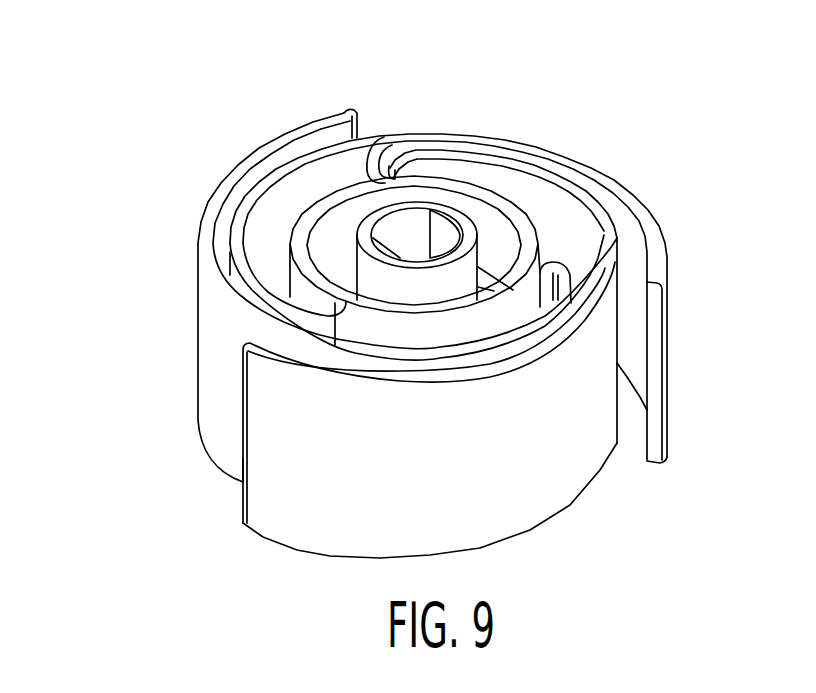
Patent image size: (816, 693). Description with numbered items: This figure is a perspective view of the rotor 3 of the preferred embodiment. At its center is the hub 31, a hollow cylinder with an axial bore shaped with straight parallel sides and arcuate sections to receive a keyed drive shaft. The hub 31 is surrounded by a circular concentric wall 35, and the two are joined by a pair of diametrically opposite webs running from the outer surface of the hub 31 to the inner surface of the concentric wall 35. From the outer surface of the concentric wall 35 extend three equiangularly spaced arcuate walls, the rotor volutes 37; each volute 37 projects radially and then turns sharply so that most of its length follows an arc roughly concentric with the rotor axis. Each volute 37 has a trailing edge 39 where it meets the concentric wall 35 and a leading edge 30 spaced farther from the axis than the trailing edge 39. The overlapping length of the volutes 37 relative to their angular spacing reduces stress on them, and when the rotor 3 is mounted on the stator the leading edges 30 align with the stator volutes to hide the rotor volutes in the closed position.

The rotor 3 is at (150, 243).
The leading edge 30 is at (243, 458).
The hub 31 is at (458, 217).
The concentric wall 35 is at (298, 260).
The rotor volute 37 is at (210, 187).
The trailing edge 39 is at (372, 177).